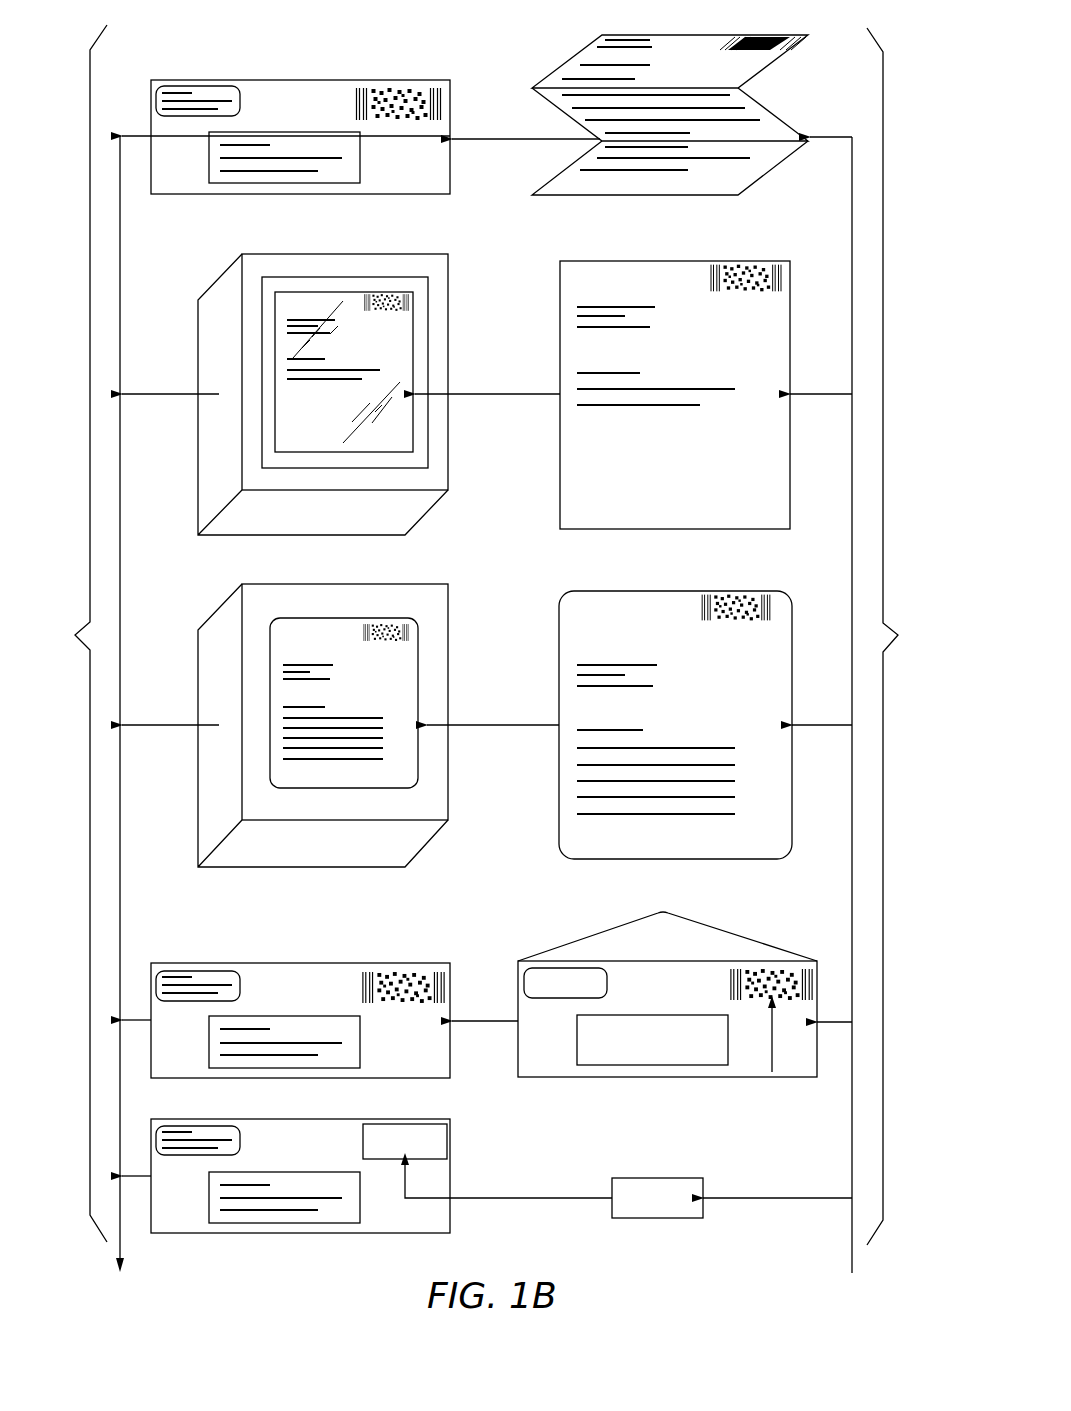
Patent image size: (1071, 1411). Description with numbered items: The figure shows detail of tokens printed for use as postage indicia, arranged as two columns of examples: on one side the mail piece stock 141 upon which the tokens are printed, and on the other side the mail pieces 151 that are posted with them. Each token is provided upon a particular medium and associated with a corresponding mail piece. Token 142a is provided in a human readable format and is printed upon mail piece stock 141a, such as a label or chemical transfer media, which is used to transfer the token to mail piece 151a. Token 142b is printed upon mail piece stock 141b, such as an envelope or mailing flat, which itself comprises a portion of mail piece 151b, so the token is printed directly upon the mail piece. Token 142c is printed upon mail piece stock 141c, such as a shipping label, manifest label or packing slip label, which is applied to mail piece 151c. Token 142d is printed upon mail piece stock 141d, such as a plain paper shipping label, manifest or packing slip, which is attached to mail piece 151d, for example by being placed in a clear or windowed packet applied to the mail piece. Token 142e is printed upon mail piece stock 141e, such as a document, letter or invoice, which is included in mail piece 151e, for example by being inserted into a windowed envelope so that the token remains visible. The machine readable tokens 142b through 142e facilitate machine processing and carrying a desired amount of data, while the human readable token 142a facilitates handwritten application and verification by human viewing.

The mail piece stock 141 is at (901, 636).
The mail piece 151 is at (72, 633).
The mail piece stock 141a is at (675, 1204).
The mail piece stock 141b is at (680, 1010).
The mail piece stock 141c is at (690, 729).
The mail piece stock 141d is at (695, 399).
The mail piece stock 141e is at (691, 120).
The token 142a is at (655, 1190).
The token 142b is at (768, 965).
The token 142c is at (742, 593).
The token 142d is at (750, 263).
The token 142e is at (777, 35).
The mail piece 151a is at (380, 1233).
The mail piece 151b is at (410, 1078).
The mail piece 151c is at (378, 867).
The mail piece 151d is at (383, 535).
The mail piece 151e is at (410, 194).